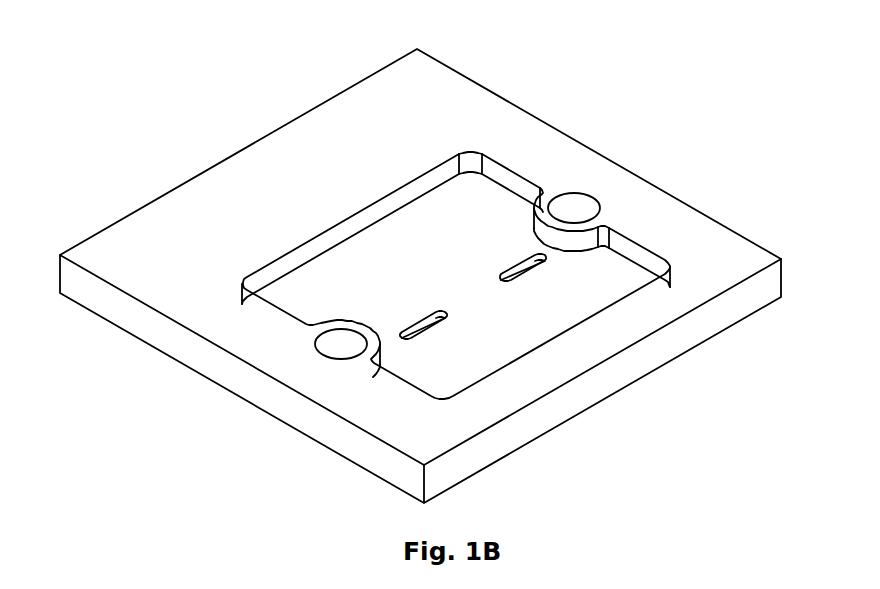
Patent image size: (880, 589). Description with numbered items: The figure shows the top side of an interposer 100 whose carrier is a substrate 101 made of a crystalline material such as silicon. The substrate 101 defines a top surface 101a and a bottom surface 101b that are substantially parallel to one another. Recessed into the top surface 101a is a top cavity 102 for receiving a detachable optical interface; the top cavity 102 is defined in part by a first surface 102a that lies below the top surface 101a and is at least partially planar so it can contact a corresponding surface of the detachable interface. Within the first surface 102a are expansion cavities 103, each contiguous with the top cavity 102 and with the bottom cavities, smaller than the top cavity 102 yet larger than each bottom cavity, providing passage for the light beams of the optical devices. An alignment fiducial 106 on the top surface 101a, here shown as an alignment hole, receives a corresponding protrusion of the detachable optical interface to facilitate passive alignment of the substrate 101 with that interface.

The interposer 100 is at (169, 63).
The substrate 101 is at (385, 470).
The top surface 101a is at (118, 243).
The bottom surface 101b is at (95, 315).
The top cavity 102 is at (468, 198).
The first surface 102a is at (518, 335).
The expansion cavity 103 is at (508, 253).
The alignment fiducial 106 is at (330, 348).